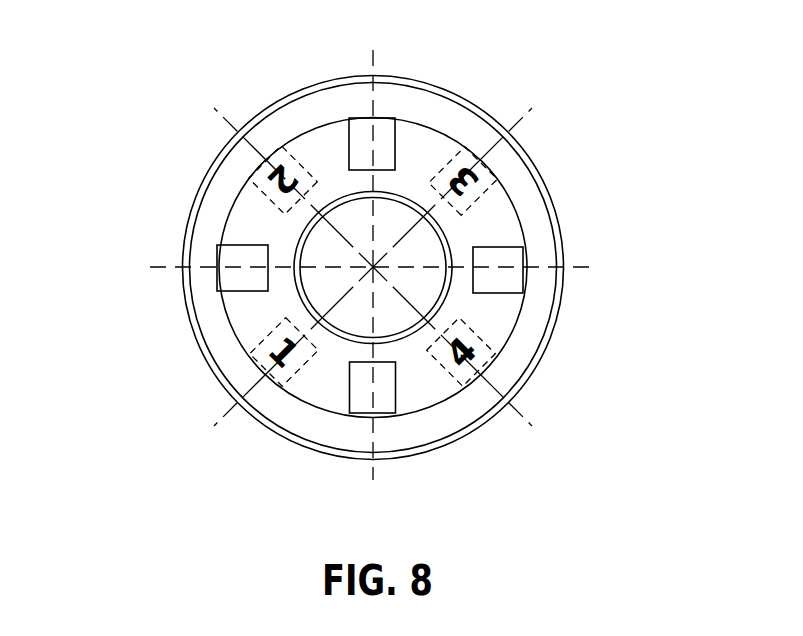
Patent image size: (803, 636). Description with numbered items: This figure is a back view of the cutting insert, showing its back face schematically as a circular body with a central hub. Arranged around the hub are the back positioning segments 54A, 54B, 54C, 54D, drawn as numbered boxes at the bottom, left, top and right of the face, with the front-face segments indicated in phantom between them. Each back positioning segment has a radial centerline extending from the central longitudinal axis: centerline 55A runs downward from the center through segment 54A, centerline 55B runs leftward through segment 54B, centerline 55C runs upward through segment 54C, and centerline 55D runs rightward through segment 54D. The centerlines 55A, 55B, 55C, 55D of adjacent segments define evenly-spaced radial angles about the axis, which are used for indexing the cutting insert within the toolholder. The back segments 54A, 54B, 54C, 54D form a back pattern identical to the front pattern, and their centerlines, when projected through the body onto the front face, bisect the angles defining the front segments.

The back positioning segment 54A is at (357, 407).
The back positioning segment 54B is at (228, 283).
The back positioning segment 54C is at (359, 125).
The back positioning segment 54D is at (518, 248).
The radial centerline 55A is at (373, 465).
The radial centerline 55B is at (160, 264).
The radial centerline 55C is at (375, 63).
The radial centerline 55D is at (588, 268).